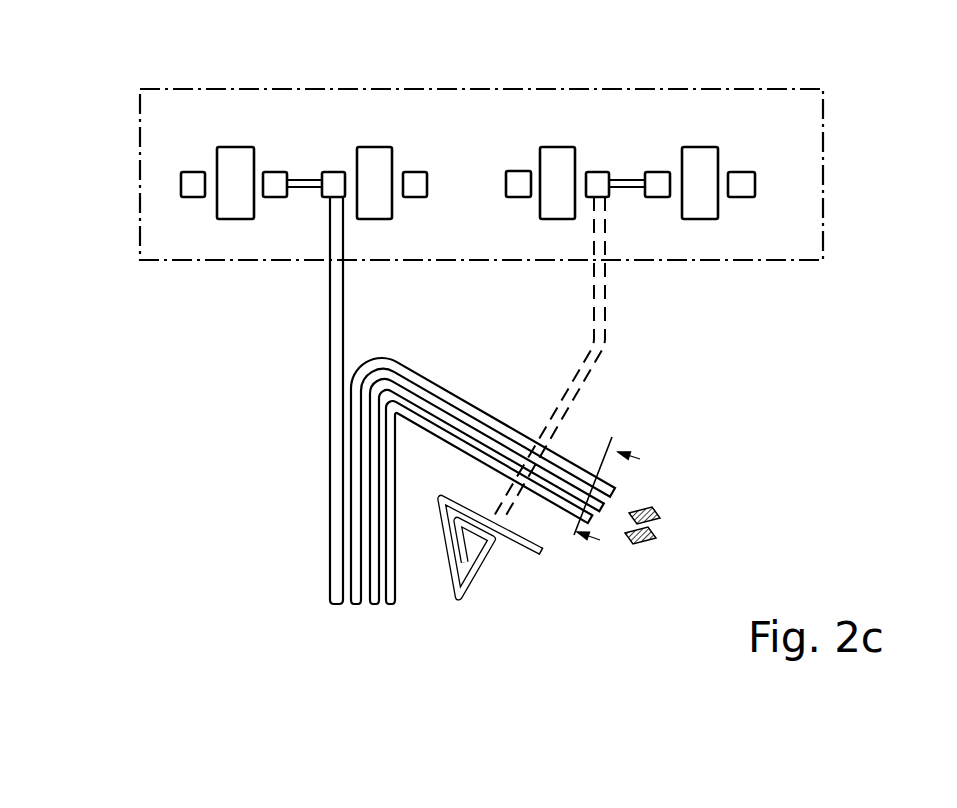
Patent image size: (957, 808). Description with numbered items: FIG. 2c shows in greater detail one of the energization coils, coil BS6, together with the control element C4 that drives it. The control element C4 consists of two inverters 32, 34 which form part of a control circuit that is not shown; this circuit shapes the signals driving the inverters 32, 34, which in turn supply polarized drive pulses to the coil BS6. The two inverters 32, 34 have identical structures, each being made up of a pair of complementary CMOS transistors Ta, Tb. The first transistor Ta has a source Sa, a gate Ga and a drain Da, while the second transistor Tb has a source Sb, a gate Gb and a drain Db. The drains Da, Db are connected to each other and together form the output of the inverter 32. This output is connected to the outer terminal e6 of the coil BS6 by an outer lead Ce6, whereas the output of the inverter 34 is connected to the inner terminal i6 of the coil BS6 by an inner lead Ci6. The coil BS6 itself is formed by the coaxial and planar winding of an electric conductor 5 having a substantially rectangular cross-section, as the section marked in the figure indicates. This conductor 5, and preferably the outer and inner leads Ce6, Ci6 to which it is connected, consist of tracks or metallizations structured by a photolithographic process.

The inverter 32 is at (226, 108).
The inverter 34 is at (666, 132).
The control element C4 is at (767, 117).
The first transistor Ta is at (178, 147).
The second transistor Tb is at (397, 228).
The source Sa is at (182, 183).
The gate Ga is at (234, 207).
The drain Da is at (275, 178).
The drain Db is at (332, 172).
The gate Gb is at (377, 165).
The source Sb is at (416, 180).
The outer lead Ce6 is at (333, 293).
The inner lead Ci6 is at (607, 318).
The outer terminal e6 is at (303, 393).
The electric conductor 5 is at (580, 462).
The inner terminal i6 is at (470, 557).
The coil BS6 is at (693, 452).